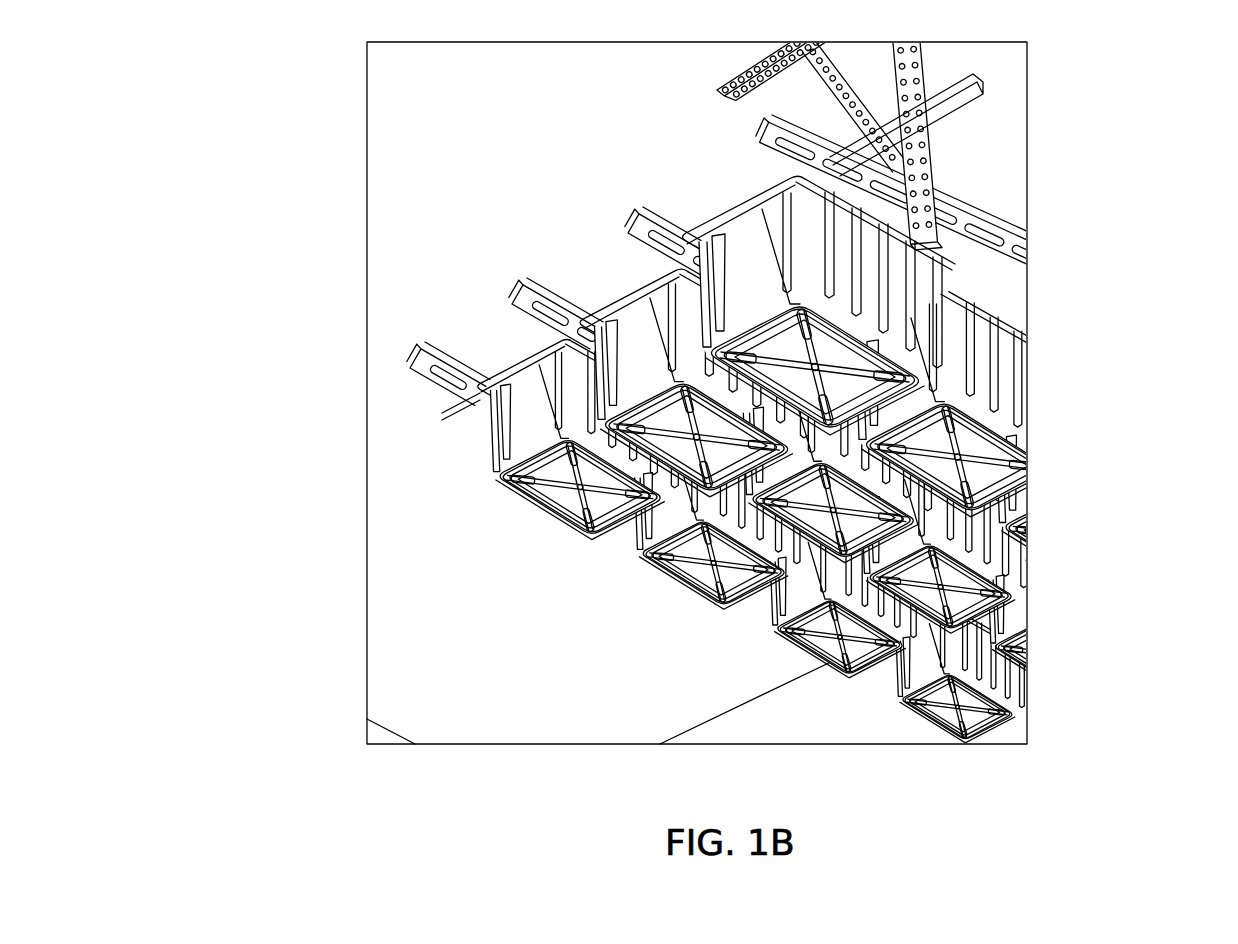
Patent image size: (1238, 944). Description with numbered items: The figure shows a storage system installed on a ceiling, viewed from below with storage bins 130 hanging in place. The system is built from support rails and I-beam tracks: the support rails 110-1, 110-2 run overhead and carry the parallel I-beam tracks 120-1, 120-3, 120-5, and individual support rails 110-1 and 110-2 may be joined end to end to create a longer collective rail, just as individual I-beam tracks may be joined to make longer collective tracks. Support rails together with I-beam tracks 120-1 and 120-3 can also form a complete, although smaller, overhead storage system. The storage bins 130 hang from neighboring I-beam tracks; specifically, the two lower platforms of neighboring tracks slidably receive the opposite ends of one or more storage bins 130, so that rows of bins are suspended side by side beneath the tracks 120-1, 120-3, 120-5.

The support rail 110-1 is at (442, 425).
The support rail 110-2 is at (960, 110).
The I-beam track 120-1 is at (410, 375).
The I-beam track 120-3 is at (505, 284).
The I-beam track 120-5 is at (630, 212).
The storage bin 130 is at (875, 325).